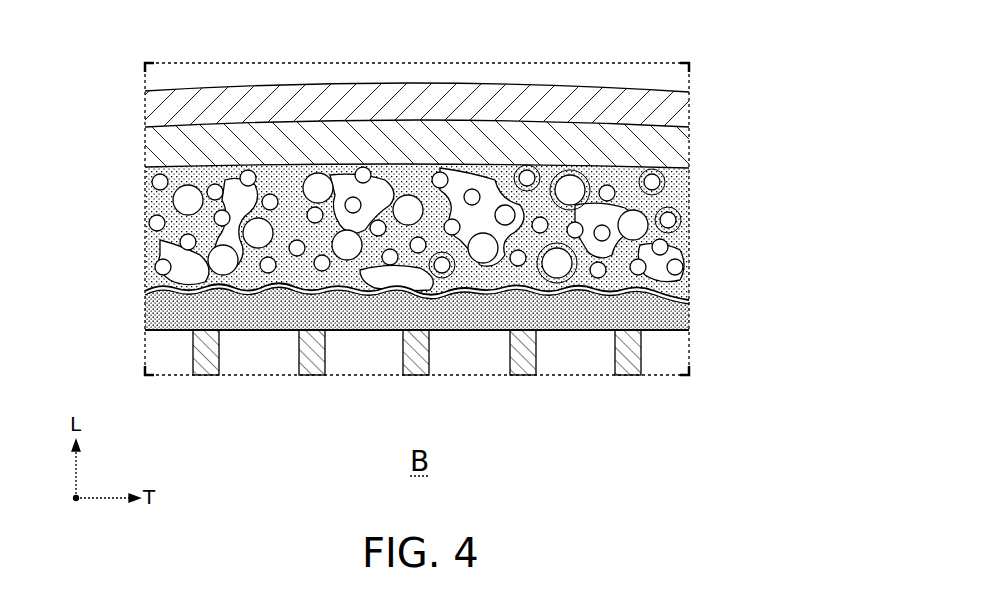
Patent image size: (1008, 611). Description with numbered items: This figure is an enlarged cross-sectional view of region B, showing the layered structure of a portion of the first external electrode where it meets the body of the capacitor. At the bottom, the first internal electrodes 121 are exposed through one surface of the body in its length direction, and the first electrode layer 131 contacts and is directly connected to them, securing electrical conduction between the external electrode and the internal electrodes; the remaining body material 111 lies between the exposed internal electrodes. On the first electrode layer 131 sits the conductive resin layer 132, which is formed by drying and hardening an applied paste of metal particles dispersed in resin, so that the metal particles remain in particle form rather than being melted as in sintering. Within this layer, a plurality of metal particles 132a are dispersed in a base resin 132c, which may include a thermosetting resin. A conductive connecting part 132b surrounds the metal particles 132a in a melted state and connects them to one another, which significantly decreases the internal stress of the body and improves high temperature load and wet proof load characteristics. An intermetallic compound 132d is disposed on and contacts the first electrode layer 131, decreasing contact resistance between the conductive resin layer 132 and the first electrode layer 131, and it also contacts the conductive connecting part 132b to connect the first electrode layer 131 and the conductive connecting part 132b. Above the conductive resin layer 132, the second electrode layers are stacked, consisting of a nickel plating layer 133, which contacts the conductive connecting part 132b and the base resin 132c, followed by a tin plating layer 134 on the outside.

The tin plating layer 134 is at (687, 118).
The nickel plating layer 133 is at (687, 158).
The conductive resin layer 132 is at (496, 238).
The metal particles 132a is at (688, 227).
The conductive connecting part 132b is at (688, 257).
The base resin 132c is at (688, 197).
The intermetallic compound 132d is at (688, 289).
The first electrode layer 131 is at (470, 317).
The substrate 111 is at (575, 357).
The first internal electrodes 121 is at (633, 365).